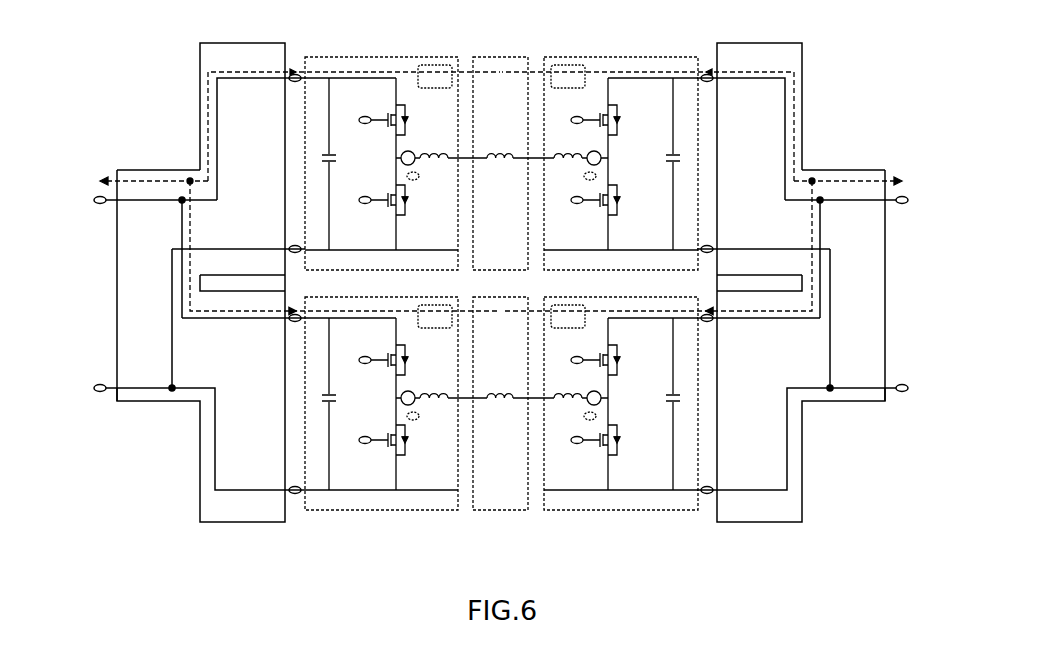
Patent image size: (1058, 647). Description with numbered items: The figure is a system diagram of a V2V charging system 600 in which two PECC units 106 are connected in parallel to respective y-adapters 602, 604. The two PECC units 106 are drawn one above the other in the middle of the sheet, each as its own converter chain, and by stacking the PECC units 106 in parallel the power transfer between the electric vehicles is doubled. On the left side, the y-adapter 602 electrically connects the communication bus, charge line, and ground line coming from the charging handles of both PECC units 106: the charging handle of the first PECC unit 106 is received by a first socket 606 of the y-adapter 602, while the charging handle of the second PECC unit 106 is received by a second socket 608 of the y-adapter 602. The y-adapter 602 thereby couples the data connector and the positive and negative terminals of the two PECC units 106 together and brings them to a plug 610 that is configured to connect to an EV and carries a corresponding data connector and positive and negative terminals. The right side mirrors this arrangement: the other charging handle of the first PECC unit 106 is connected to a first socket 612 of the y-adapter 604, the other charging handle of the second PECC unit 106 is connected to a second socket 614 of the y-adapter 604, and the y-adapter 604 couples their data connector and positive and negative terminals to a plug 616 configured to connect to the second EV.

The V2V charging system 600 is at (134, 31).
The y-adapter 602 is at (226, 43).
The y-adapter 604 is at (750, 43).
The first socket 606 is at (200, 83).
The second socket 608 is at (200, 465).
The plug 610 is at (117, 290).
The first socket 612 is at (800, 68).
The second socket 614 is at (800, 450).
The plug 616 is at (885, 282).
The PECC unit 106 is at (513, 37).